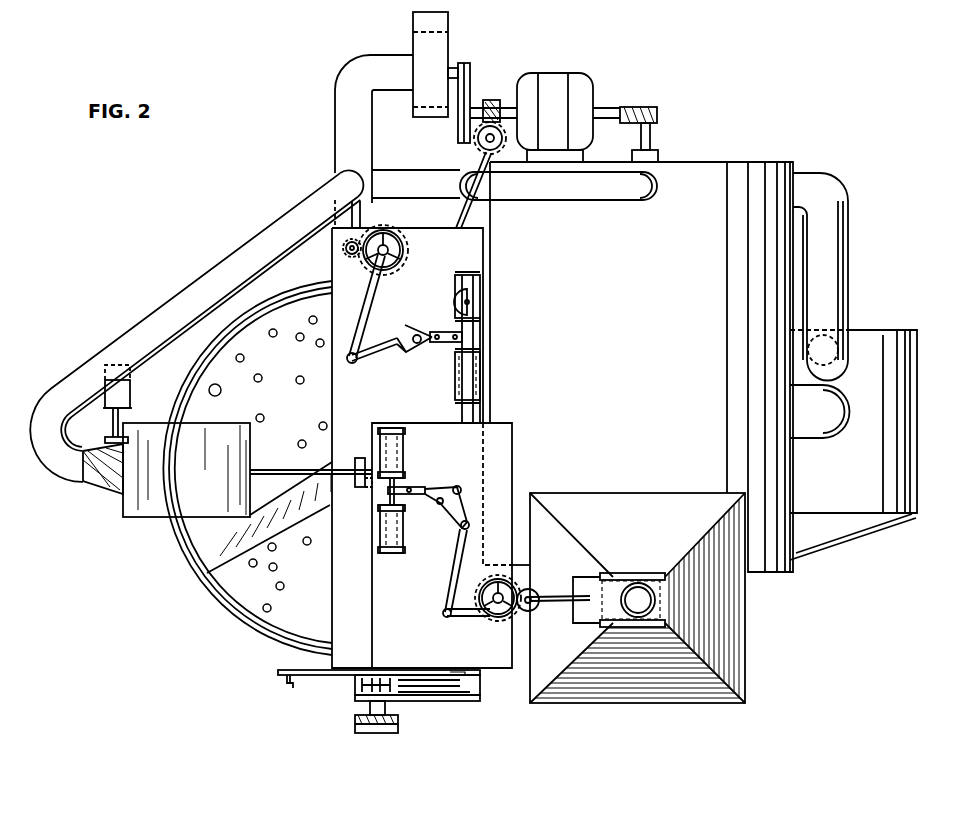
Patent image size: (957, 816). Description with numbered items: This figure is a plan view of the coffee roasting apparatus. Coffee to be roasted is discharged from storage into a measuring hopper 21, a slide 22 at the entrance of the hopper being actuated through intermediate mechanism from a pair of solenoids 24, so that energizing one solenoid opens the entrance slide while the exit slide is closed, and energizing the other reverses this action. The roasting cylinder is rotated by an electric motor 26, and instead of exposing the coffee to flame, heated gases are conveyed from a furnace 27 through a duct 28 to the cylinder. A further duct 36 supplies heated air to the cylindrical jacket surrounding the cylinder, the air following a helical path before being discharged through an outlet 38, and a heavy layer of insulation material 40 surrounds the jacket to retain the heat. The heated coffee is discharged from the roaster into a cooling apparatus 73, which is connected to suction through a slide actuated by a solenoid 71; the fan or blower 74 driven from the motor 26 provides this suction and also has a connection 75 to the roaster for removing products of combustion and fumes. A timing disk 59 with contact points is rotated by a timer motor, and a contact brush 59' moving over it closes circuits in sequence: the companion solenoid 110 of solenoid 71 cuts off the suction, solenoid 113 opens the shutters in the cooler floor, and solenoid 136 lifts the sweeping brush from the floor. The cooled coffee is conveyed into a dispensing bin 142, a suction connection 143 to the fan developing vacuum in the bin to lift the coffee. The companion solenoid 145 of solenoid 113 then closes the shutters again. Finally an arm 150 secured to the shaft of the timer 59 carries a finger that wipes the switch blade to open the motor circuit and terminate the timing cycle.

The fan or blower 74 is at (443, 45).
The electric motor 26 is at (588, 92).
The connection 75 is at (594, 201).
The insulation material 40 is at (641, 367).
The duct 36 is at (838, 223).
The furnace 27 is at (905, 426).
The duct 28 is at (847, 405).
The outlet 38 is at (815, 550).
The measuring hopper 21 is at (637, 598).
The slide 22 is at (588, 610).
The solenoid 110 is at (456, 288).
The solenoid 71 is at (457, 374).
The solenoids 24 is at (404, 477).
The solenoid 136 is at (365, 487).
The suction connection 143 is at (199, 284).
The solenoid 113 is at (131, 392).
The solenoid 145 is at (103, 437).
The dispensing bin 142 is at (227, 498).
The cooling apparatus 73 is at (216, 606).
The timing disk 59 is at (379, 689).
The contact brush 59' is at (417, 669).
The arm 150 is at (428, 702).